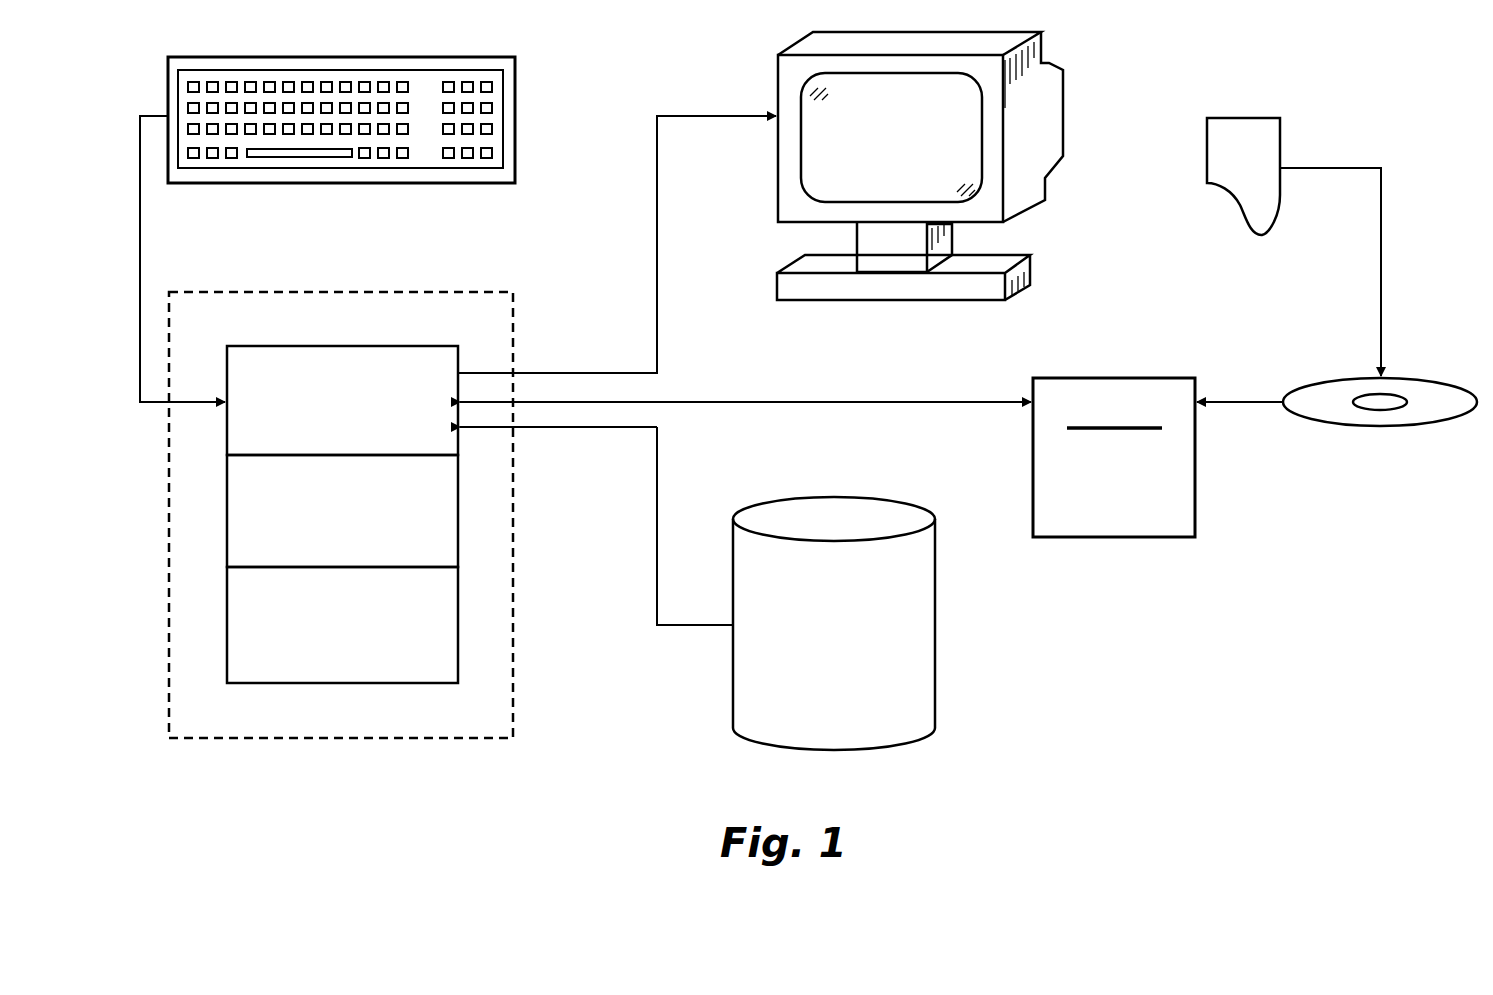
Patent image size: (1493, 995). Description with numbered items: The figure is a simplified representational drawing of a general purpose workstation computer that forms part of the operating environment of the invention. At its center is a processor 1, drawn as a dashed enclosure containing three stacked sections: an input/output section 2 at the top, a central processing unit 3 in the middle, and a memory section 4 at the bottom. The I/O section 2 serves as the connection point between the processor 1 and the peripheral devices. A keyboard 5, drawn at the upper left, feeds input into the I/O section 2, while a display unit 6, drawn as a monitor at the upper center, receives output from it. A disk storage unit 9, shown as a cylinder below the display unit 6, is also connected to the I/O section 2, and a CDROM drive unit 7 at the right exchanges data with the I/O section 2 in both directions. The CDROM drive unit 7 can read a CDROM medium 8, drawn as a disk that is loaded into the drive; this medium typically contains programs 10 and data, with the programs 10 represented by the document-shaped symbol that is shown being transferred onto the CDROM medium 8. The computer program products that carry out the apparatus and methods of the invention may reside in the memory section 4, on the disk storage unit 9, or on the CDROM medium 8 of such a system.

The processor 1 is at (463, 290).
The input/output section 2 is at (320, 350).
The central processing unit 3 is at (460, 528).
The memory section 4 is at (460, 667).
The keyboard 5 is at (493, 57).
The display unit 6 is at (990, 40).
The CDROM drive unit 7 is at (1063, 378).
The CDROM medium 8 is at (1353, 383).
The disk storage unit 9 is at (935, 597).
The programs 10 is at (1223, 127).